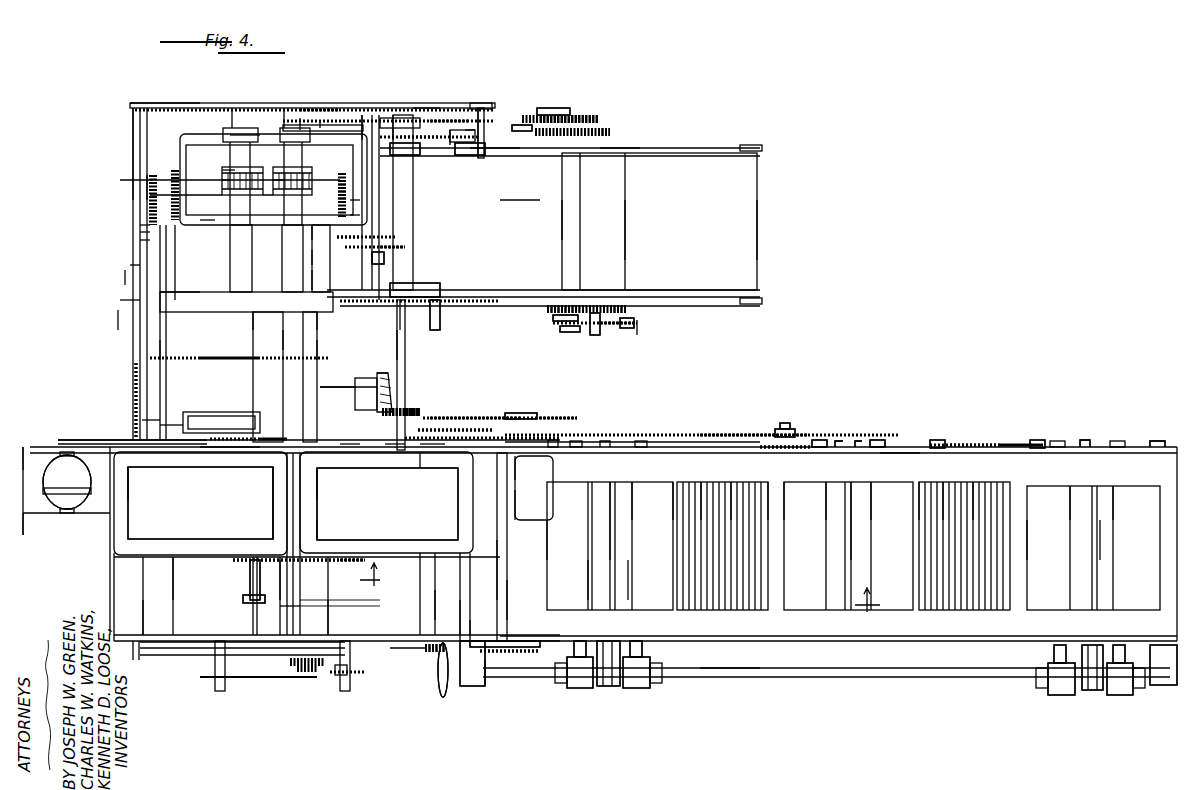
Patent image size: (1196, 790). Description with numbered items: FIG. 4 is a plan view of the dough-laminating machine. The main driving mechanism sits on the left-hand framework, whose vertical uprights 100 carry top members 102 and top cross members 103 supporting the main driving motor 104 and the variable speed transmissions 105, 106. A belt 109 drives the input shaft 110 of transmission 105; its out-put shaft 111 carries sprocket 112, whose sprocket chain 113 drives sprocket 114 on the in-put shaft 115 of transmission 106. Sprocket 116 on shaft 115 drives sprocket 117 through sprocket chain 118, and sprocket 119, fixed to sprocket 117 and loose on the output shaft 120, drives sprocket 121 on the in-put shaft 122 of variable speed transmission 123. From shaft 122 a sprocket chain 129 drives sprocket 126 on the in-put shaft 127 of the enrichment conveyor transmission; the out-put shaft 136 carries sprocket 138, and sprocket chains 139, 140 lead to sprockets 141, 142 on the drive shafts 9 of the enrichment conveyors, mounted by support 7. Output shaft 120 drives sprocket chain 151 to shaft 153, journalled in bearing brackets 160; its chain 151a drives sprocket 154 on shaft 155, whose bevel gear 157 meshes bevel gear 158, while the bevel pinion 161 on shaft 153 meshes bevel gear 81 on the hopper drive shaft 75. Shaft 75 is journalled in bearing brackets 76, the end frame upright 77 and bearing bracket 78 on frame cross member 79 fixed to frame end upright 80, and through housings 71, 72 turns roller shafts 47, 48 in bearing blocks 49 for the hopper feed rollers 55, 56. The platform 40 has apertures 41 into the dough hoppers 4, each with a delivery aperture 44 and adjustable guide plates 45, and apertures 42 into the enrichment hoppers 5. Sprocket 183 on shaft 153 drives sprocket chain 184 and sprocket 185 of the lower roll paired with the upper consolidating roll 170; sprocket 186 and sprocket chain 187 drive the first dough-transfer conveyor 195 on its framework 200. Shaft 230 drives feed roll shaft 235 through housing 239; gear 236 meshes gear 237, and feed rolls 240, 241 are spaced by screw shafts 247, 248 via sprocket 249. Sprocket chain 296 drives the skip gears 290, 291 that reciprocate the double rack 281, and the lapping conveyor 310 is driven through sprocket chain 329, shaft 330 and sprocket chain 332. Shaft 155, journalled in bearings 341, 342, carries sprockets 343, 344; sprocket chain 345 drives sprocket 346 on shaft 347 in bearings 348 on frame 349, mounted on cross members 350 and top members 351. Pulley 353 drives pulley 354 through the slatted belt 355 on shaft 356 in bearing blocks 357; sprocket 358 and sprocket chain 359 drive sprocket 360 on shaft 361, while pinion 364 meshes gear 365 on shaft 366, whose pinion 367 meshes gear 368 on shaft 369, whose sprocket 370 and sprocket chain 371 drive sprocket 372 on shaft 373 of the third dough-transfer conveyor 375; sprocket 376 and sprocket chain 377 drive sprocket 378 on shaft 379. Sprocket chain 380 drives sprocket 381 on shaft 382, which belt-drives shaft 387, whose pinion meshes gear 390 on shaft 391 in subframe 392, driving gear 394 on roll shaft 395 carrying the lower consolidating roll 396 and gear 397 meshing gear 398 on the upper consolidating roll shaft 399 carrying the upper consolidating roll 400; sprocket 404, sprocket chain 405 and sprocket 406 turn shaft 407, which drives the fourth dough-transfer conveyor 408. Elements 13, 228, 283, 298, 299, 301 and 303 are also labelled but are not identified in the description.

The dough hopper 4 is at (630, 490).
The enrichment hopper 5 is at (728, 500).
The support 7 is at (620, 587).
The shaft 9 is at (1050, 445).
The slats 13 is at (705, 500).
The platform 40 is at (903, 456).
The aperture 41 is at (670, 486).
The aperture 42 is at (760, 486).
The delivery aperture 44 is at (610, 540).
The adjustable guide plate 45 is at (1125, 545).
The roller shaft 47 is at (825, 433).
The roller shaft 48 is at (877, 440).
The bearing block 49 is at (838, 441).
The hopper feed roller 55 is at (588, 575).
The hopper feed roller 56 is at (618, 580).
The housing 71 is at (568, 688).
The housing 72 is at (648, 690).
The hopper drive shaft 75 is at (722, 680).
The bearing bracket 76 is at (608, 641).
The end frame upright 77 is at (1160, 441).
The bearing bracket 78 is at (482, 686).
The frame cross member 79 is at (470, 625).
The frame end upright 80 is at (472, 663).
The bevel gear 81 is at (440, 695).
The vertical upright 100 is at (150, 620).
The top member 102 is at (20, 446).
The top cross member 103 is at (318, 615).
The main driving motor 104 is at (67, 482).
The variable speed transmission 105 is at (195, 526).
The variable speed transmission 106 is at (385, 522).
The belt 109 is at (98, 440).
The shaft 110 is at (170, 453).
The out-put shaft 111 is at (258, 542).
The sprocket 112 is at (250, 575).
The sprocket chain 113 is at (280, 575).
The sprocket 114 is at (350, 562).
The in-put shaft 115 is at (345, 550).
The sprocket 116 is at (345, 455).
The sprocket 117 is at (425, 455).
The sprocket chain 118 is at (365, 447).
The sprocket 119 is at (402, 447).
The output shaft 120 is at (425, 450).
The sprocket 121 is at (552, 452).
The in-put shaft 122 is at (533, 468).
The variable speed transmission 123 is at (530, 490).
The sprocket 126 is at (792, 429).
The in-put shaft 127 is at (795, 424).
The sprocket chain 129 is at (712, 434).
The out-put shaft 136 is at (955, 445).
The sprocket 138 is at (938, 440).
The sprocket chain 139 is at (805, 486).
The sprocket chain 140 is at (1005, 443).
The sprocket 141 is at (780, 446).
The sprocket 142 is at (1035, 440).
The sprocket chain 151 is at (478, 428).
The chain 151a is at (470, 416).
The shaft 153 is at (435, 594).
The sprocket 154 is at (418, 416).
The shaft 155 is at (405, 358).
The bevel gear 157 is at (400, 408).
The bevel gear 158 is at (380, 372).
The bearing bracket 160 is at (440, 625).
The bevel pinion 161 is at (432, 652).
The upper consolidating roll 170 is at (505, 565).
The sprocket 183 is at (462, 416).
The sprocket chain 184 is at (565, 416).
The sprocket 185 is at (520, 413).
The sprocket 186 is at (520, 641).
The sprocket chain 187 is at (495, 654).
The first dough-transfer conveyor 195 is at (495, 585).
The dough-transfer conveyor framework 200 is at (280, 610).
The arm 228 is at (140, 426).
The shaft 230 is at (165, 420).
The feed roll shaft 235 is at (124, 192).
The gear 236 is at (232, 452).
The gear 237 is at (282, 437).
The housing 239 is at (350, 183).
The feed roll 240 is at (225, 550).
The feed roll 241 is at (243, 595).
The screw shaft 247 is at (166, 340).
The screw shaft 248 is at (303, 336).
The sprocket 249 is at (222, 360).
The double rack 281 is at (405, 652).
The post 283 is at (133, 150).
The skip gear 290 is at (140, 222).
The skip gear 291 is at (140, 240).
The sprocket chain 296 is at (140, 232).
The gear 298 is at (120, 302).
The block 299 is at (118, 320).
The gear 301 is at (125, 276).
The gear 303 is at (130, 262).
The lapping conveyor 310 is at (185, 550).
The sprocket chain 329 is at (340, 400).
The shaft 330 is at (317, 340).
The sprocket chain 332 is at (135, 390).
The bearing 341 is at (400, 290).
The bearing 342 is at (405, 153).
The sprocket 343 is at (405, 136).
The sprocket 344 is at (430, 118).
The sprocket chain 345 is at (325, 120).
The sprocket 346 is at (280, 125).
The shaft 347 is at (232, 125).
The bearing 348 is at (230, 135).
The frame 349 is at (207, 212).
The cross member 350 is at (245, 308).
The top member 351 is at (186, 298).
The pulley 353 is at (225, 168).
The pulley 354 is at (273, 187).
The belt 355 is at (222, 181).
The shaft 356 is at (292, 215).
The bearing block 357 is at (300, 225).
The sprocket 358 is at (300, 125).
The sprocket chain 359 is at (325, 108).
The sprocket 360 is at (362, 130).
The shaft 361 is at (395, 130).
The pinion 364 is at (283, 277).
The gear 365 is at (360, 236).
The shaft 366 is at (335, 202).
The pinion 367 is at (378, 260).
The gear 368 is at (365, 250).
The shaft 369 is at (355, 215).
The sprocket 370 is at (317, 320).
The sprocket chain 371 is at (420, 306).
The sprocket 372 is at (465, 306).
The shaft 373 is at (478, 135).
The third dough-transfer conveyor 375 is at (500, 216).
The sprocket 376 is at (480, 105).
The sprocket chain 377 is at (415, 105).
The sprocket 378 is at (140, 95).
The shaft 379 is at (133, 115).
The sprocket chain 380 is at (448, 150).
The sprocket 381 is at (462, 150).
The shaft 382 is at (470, 130).
The shaft 387 is at (530, 128).
The gear 390 is at (570, 118).
The shaft 391 is at (560, 108).
The subframe 392 is at (600, 148).
The gear 394 is at (605, 130).
The roll shaft 395 is at (550, 322).
The lower consolidating roll 396 is at (560, 258).
The gear 397 is at (548, 312).
The gear 398 is at (628, 310).
The upper consolidating roll shaft 399 is at (592, 325).
The upper consolidating roll 400 is at (620, 270).
The sprocket 404 is at (560, 333).
The sprocket chain 405 is at (592, 336).
The sprocket 406 is at (636, 330).
The shaft 407 is at (634, 322).
The fourth dough-transfer conveyor 408 is at (748, 265).